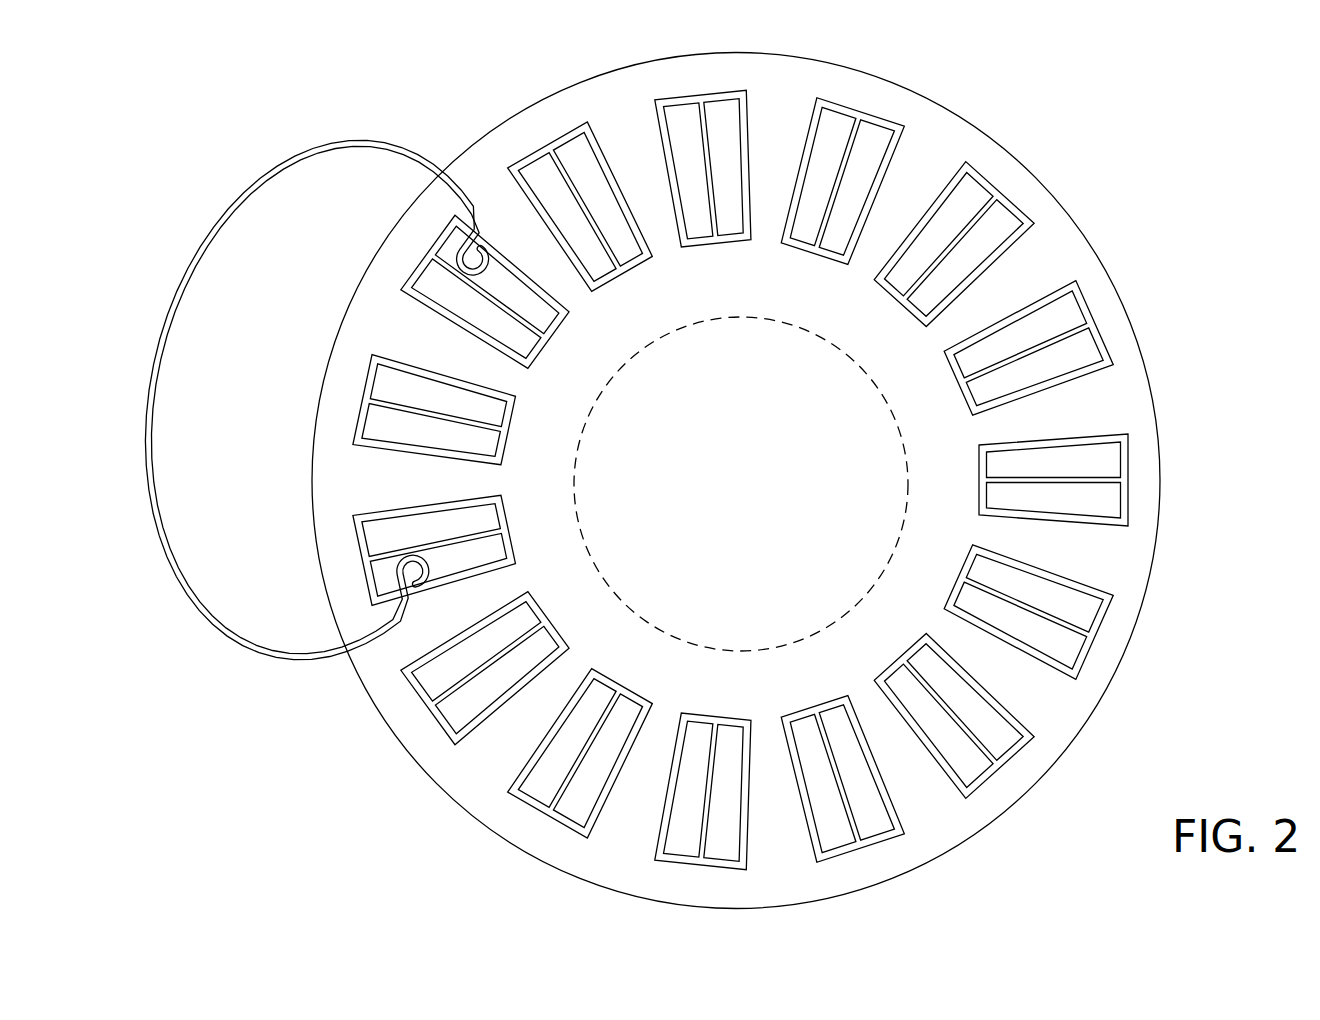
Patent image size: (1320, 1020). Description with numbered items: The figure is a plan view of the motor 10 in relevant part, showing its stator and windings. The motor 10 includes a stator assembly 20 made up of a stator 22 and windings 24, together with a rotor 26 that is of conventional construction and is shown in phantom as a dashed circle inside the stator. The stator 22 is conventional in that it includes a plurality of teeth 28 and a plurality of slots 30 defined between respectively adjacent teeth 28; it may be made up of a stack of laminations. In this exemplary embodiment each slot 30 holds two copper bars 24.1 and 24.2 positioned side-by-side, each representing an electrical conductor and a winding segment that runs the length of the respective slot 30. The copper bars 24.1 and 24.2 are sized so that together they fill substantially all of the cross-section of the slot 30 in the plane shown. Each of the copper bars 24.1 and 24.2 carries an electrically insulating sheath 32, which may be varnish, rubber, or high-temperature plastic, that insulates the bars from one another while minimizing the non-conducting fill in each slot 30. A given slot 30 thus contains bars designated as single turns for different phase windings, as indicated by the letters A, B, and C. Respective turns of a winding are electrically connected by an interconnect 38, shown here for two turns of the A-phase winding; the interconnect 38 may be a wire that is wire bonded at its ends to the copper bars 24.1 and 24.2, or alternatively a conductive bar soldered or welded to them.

The motor 10 is at (258, 106).
The stator assembly 20 is at (1087, 203).
The stator 22 is at (1100, 240).
The windings 24 is at (868, 100).
The copper bar 24.1 is at (968, 357).
The copper bar 24.2 is at (990, 385).
The rotor 26 is at (735, 316).
The teeth 28 is at (865, 258).
The slots 30 is at (643, 284).
The electrically insulating sheath 32 is at (385, 515).
The interconnect 38 is at (203, 240).